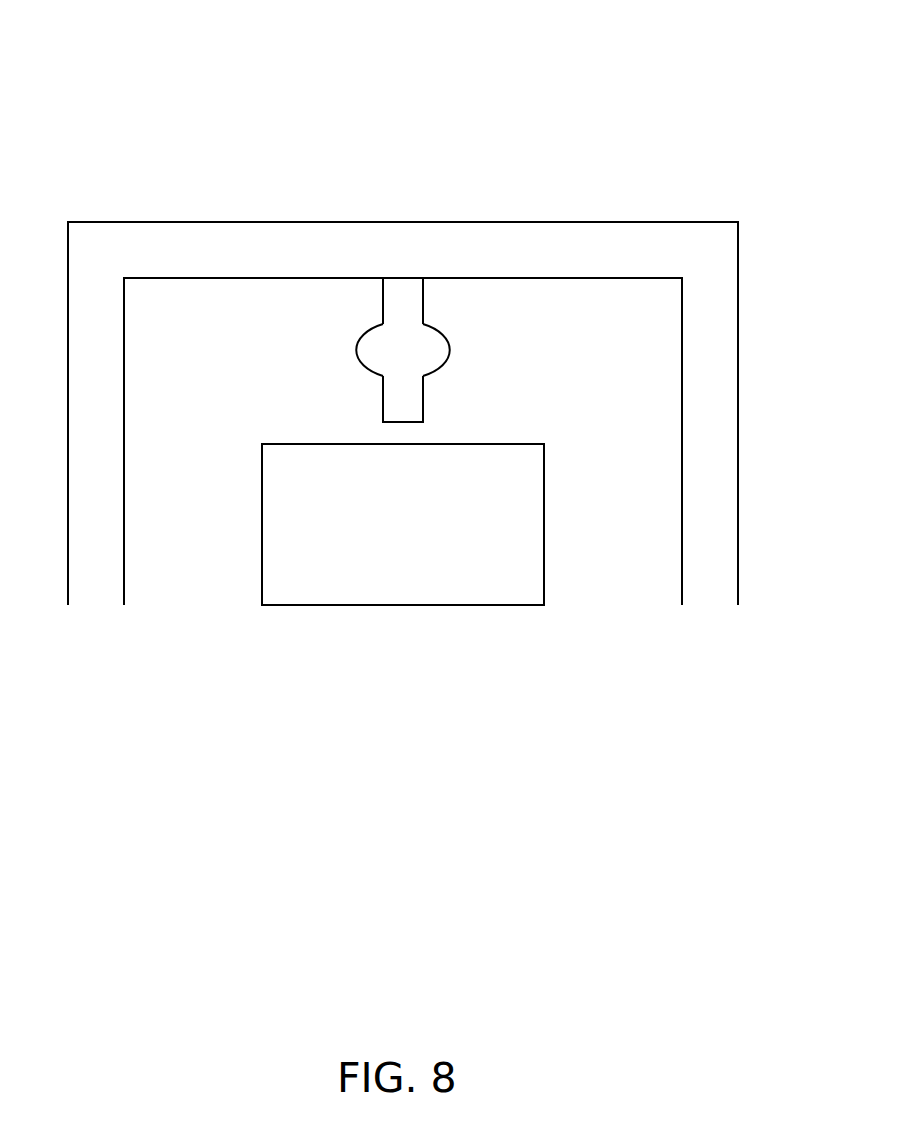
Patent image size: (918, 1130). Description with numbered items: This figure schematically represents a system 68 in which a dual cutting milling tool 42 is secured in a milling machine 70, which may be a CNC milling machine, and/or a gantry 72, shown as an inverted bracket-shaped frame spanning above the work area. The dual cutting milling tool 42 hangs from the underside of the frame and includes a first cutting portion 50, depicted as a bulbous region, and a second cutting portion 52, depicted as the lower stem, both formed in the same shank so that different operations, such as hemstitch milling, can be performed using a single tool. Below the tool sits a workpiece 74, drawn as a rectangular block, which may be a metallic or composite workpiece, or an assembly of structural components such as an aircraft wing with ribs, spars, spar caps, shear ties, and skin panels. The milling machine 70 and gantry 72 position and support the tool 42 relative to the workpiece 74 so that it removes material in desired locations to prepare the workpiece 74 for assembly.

The system 68 is at (727, 107).
The milling machine 70 is at (293, 243).
The gantry 72 is at (725, 262).
The dual cutting milling tool 42 is at (358, 377).
The first cutting portion 50 is at (447, 335).
The second cutting portion 52 is at (417, 403).
The workpiece 74 is at (530, 542).